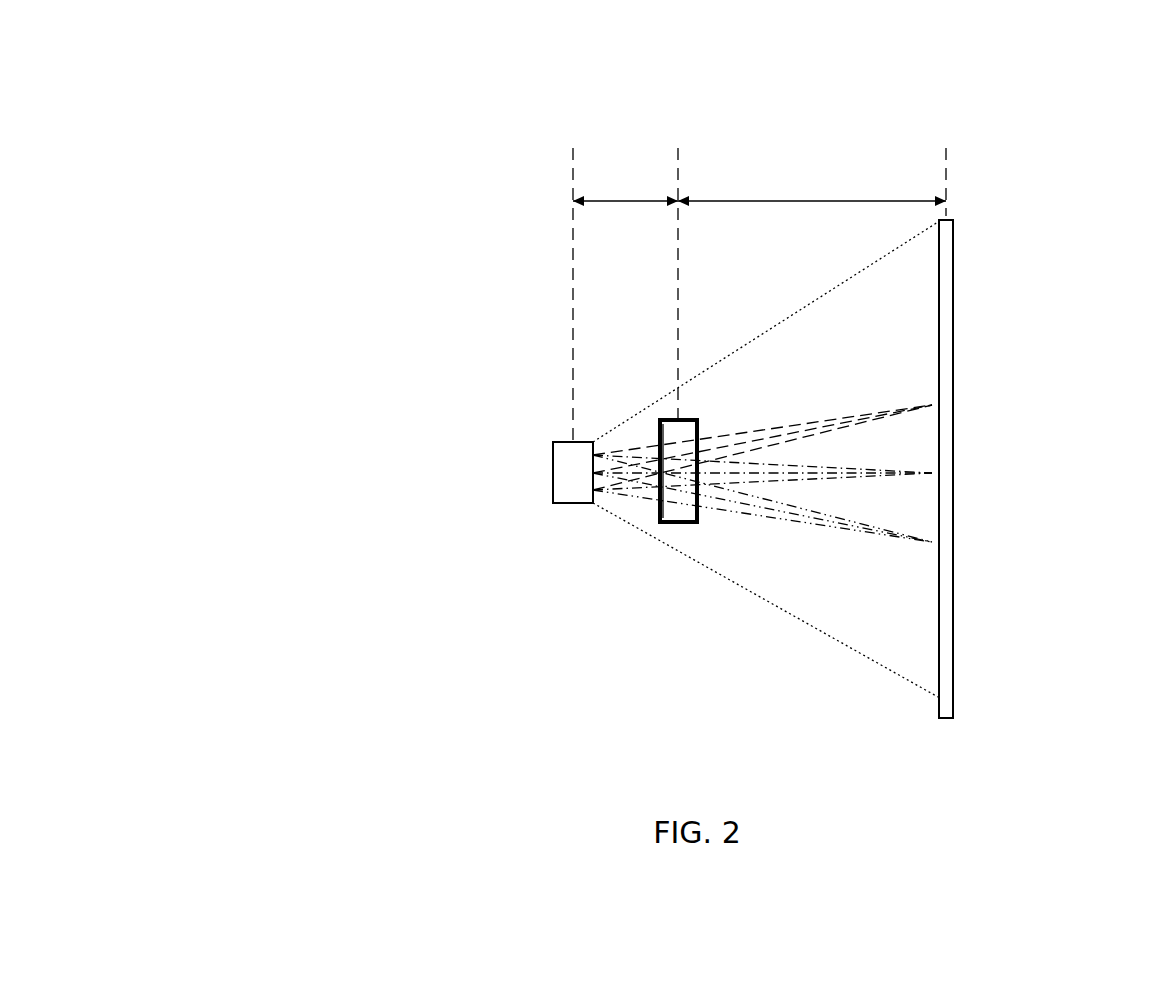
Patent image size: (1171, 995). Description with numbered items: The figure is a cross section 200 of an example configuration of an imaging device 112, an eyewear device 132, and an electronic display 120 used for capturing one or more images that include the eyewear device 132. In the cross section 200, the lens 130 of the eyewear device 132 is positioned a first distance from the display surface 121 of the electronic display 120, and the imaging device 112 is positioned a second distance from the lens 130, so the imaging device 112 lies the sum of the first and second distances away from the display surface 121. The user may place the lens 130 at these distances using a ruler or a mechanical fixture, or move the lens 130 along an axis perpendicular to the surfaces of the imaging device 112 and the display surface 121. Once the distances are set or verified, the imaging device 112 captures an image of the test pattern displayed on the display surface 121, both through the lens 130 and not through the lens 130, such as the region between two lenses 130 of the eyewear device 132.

The cross section 200 is at (664, 415).
The imaging device 112 is at (553, 472).
The electronic display 120 is at (951, 220).
The display surface 121 is at (938, 622).
The lens 130 is at (660, 429).
The eyewear device 132 is at (679, 541).